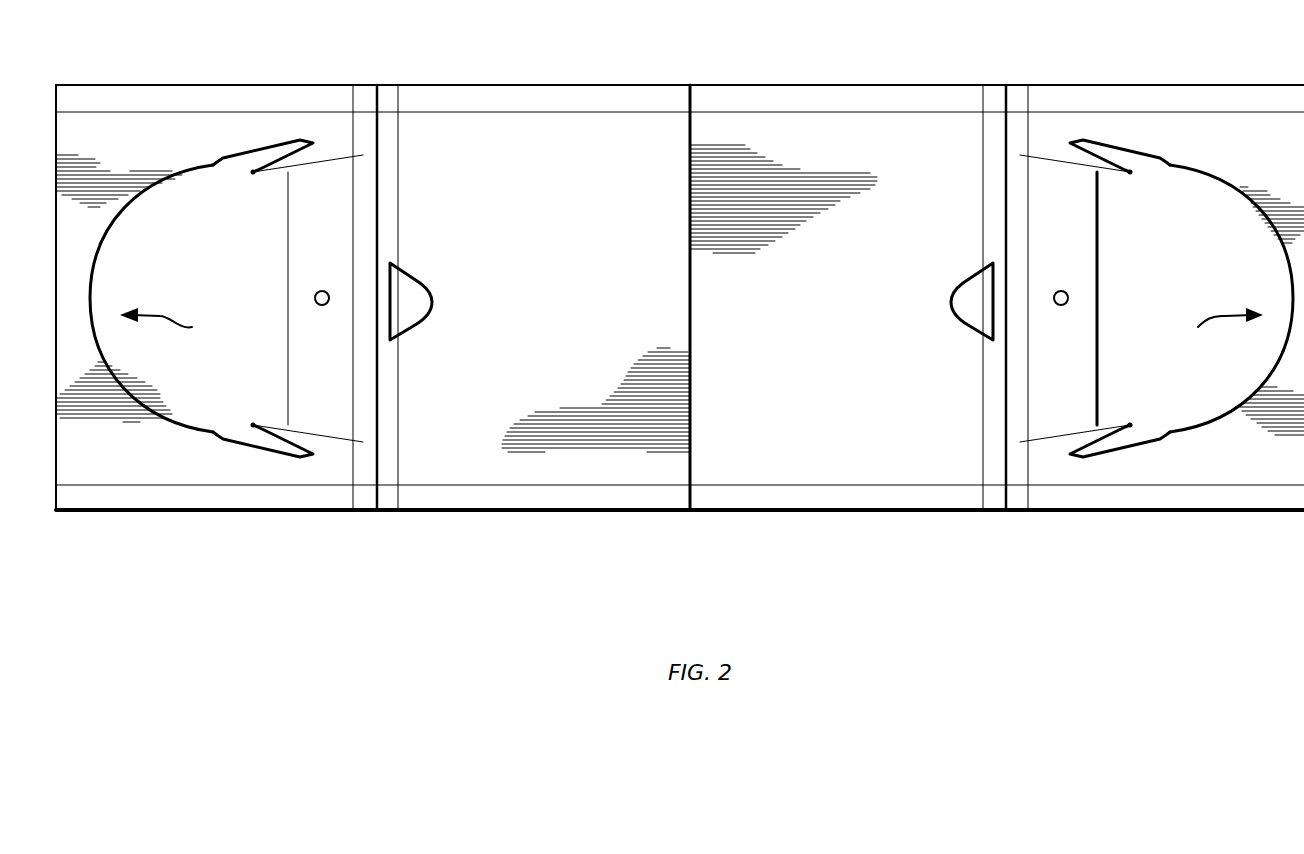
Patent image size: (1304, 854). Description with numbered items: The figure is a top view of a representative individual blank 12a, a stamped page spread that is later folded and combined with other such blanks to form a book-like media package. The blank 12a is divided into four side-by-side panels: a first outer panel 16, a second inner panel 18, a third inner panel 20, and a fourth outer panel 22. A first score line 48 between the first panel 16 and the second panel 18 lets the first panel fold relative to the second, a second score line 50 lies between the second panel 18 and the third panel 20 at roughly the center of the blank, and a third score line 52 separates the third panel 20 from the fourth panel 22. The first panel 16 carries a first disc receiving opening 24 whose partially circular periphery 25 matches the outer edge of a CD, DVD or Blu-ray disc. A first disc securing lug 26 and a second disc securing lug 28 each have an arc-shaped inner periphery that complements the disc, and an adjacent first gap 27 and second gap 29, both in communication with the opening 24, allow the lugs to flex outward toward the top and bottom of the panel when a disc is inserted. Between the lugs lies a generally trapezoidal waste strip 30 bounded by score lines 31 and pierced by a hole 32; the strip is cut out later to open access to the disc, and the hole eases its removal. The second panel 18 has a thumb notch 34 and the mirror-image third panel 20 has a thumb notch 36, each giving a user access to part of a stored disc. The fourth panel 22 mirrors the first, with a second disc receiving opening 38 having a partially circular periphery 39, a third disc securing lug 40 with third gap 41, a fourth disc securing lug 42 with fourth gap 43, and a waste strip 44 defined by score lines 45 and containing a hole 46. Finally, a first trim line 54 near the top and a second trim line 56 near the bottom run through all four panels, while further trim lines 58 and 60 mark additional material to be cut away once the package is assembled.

The blank 12a is at (667, 540).
The first outer panel 16 is at (140, 470).
The second inner panel 18 is at (473, 466).
The third inner panel 20 is at (858, 455).
The fourth outer panel 22 is at (1193, 470).
The first disc receiving opening 24 is at (170, 324).
The partially circular periphery 25 is at (97, 275).
The first disc securing lug 26 is at (253, 174).
The first gap 27 is at (271, 140).
The second disc securing lug 28 is at (254, 424).
The second gap 29 is at (263, 452).
The waste strip 30 is at (296, 345).
The score lines 31 is at (335, 165).
The hole 32 is at (314, 297).
The thumb notch 34 is at (417, 283).
The thumb notch 36 is at (960, 300).
The second disc receiving opening 38 is at (1214, 324).
The partially circular periphery 39 is at (1292, 274).
The third disc securing lug 40 is at (1128, 174).
The third gap 41 is at (1104, 140).
The fourth disc securing lug 42 is at (1130, 424).
The fourth gap 43 is at (1113, 452).
The waste strip 44 is at (1087, 253).
The score lines 45 is at (1060, 168).
The hole 46 is at (1070, 297).
The first score line 48 is at (377, 493).
The second score line 50 is at (692, 453).
The third score line 52 is at (1007, 495).
The first trim line 54 is at (567, 110).
The second trim line 56 is at (583, 485).
The trim line 58 is at (353, 97).
The trim line 60 is at (983, 132).